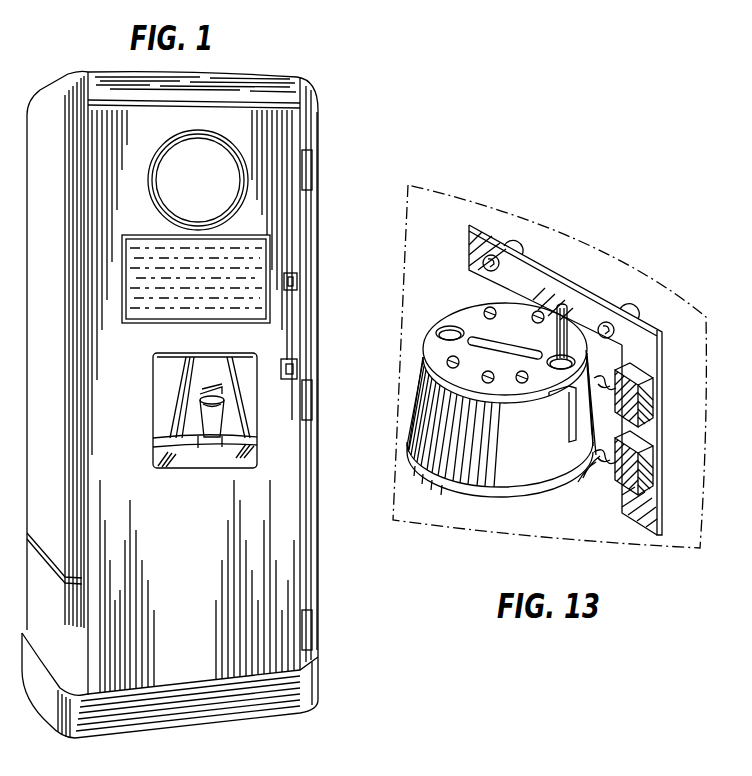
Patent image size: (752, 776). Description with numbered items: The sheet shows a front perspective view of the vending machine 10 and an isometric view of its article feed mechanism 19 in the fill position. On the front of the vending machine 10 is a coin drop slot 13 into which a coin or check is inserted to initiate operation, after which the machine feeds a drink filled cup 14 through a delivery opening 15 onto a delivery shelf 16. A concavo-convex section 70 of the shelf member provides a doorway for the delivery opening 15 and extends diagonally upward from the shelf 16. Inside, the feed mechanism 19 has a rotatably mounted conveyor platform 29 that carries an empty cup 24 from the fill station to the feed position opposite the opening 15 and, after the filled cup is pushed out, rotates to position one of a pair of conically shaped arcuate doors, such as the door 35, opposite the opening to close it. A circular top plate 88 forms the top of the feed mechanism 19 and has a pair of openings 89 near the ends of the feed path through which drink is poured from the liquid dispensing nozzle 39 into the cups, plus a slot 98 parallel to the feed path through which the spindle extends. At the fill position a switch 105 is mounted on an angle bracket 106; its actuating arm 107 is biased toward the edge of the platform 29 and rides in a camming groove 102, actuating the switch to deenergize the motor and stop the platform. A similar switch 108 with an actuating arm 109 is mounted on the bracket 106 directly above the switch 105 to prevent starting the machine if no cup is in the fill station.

In FIG. 1, the vending machine 10 is at (317, 194).
In FIG. 1, the coin drop slot 13 is at (297, 280).
In FIG. 1, the drink filled cup 14 is at (226, 413).
In FIG. 1, the delivery opening 15 is at (198, 395).
In FIG. 1, the delivery shelf 16 is at (222, 441).
In FIG. 1, the concavo-convex section 70 is at (163, 464).
In FIG. 13, the article feed mechanism 19 is at (435, 317).
In FIG. 13, the cup 24 is at (572, 409).
In FIG. 13, the conveyor platform 29 is at (446, 484).
In FIG. 13, the door 35 is at (413, 396).
In FIG. 13, the liquid dispensing nozzle 39 is at (566, 322).
In FIG. 13, the top plate 88 is at (470, 307).
In FIG. 13, the openings 89 is at (447, 327).
In FIG. 13, the slot 98 is at (503, 347).
In FIG. 13, the camming groove 102 is at (590, 474).
In FIG. 13, the switch 105 is at (620, 481).
In FIG. 13, the angle bracket 106 is at (657, 512).
In FIG. 13, the actuating arm 107 is at (605, 456).
In FIG. 13, the switch 108 is at (641, 405).
In FIG. 13, the actuating arm 109 is at (598, 385).